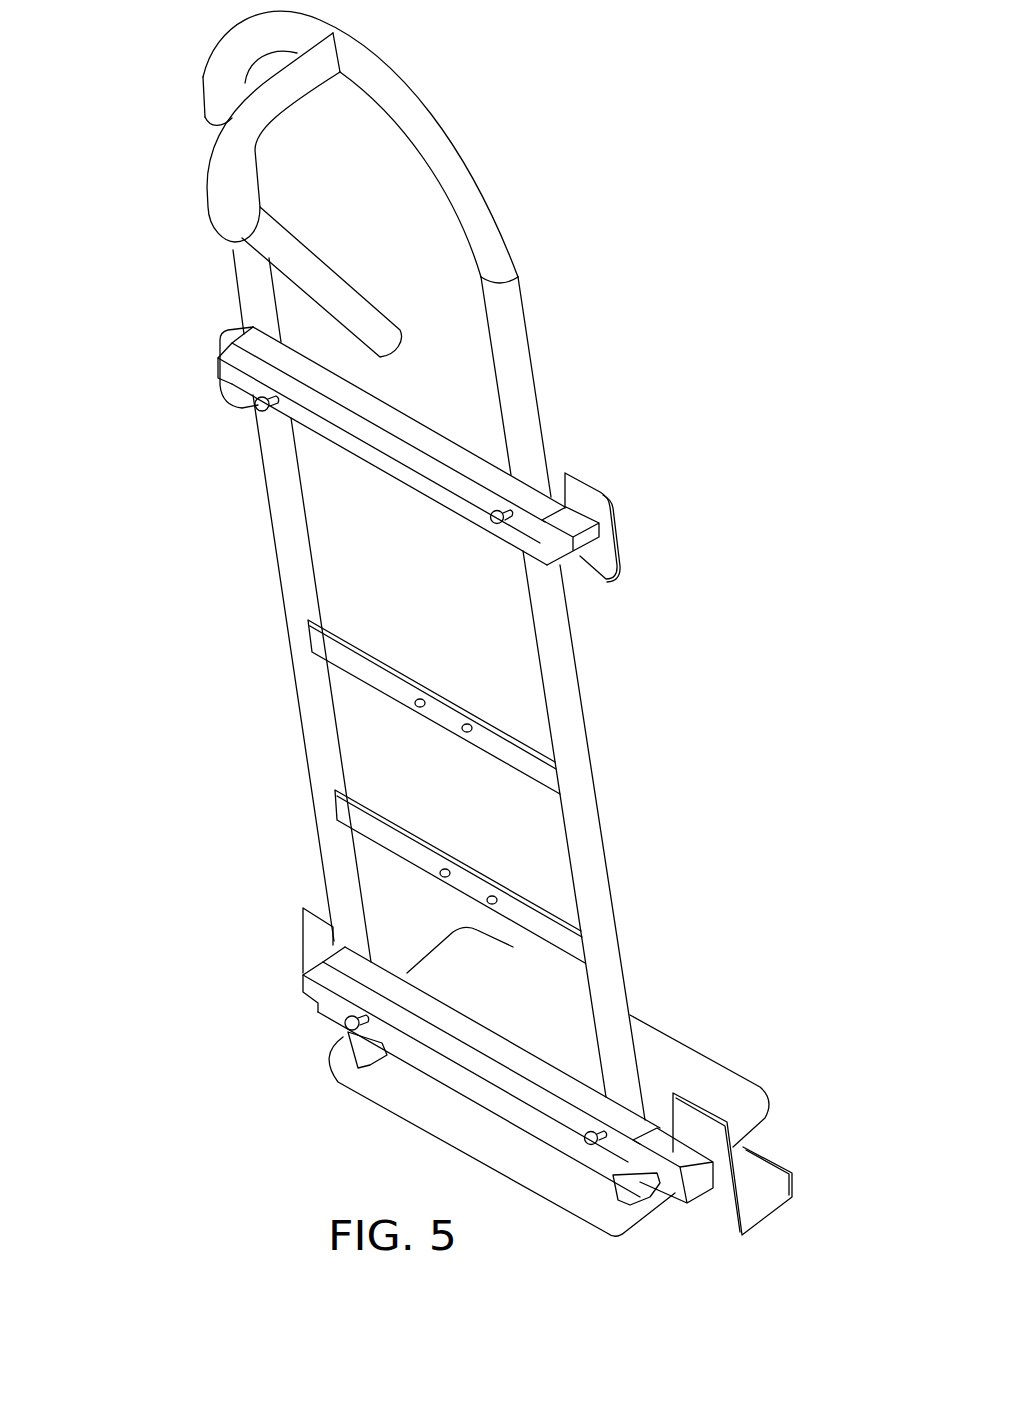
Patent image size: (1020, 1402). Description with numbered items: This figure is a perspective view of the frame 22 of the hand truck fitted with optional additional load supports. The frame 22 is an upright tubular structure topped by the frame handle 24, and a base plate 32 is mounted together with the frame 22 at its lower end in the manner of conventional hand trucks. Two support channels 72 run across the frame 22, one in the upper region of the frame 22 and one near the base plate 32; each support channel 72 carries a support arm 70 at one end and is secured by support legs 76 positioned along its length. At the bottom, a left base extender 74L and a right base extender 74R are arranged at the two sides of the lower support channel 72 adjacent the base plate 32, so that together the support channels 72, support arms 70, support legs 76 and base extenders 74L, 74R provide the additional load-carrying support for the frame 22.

The frame 22 is at (510, 292).
The frame handle 24 is at (222, 202).
The base plate 32 is at (717, 1093).
The support arm 70 is at (600, 513).
The support channel 72 is at (380, 455).
The left base extender 74L is at (315, 933).
The right base extender 74R is at (767, 1182).
The support leg 76 is at (500, 515).